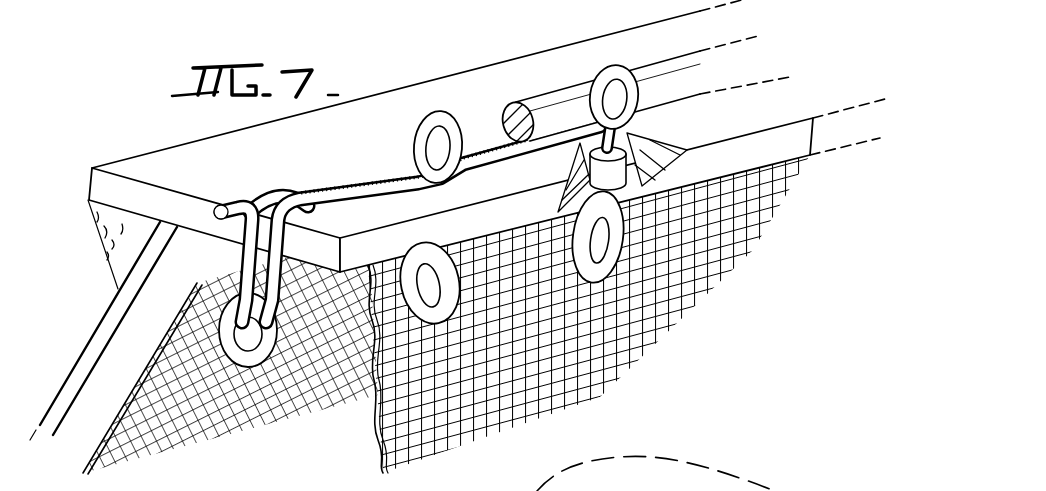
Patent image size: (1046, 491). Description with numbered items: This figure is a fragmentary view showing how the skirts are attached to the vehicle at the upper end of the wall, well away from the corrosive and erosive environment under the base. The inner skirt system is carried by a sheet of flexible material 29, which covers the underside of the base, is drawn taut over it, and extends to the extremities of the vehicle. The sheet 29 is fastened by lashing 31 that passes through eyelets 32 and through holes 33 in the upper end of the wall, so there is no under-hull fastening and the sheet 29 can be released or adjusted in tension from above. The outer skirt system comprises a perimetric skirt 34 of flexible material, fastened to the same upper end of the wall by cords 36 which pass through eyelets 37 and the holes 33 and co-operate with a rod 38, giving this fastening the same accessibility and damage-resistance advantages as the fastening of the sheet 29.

The sheet of flexible material 29 is at (187, 430).
The lashing 31 is at (358, 178).
The eyelets 32 is at (247, 352).
The holes 33 is at (272, 196).
The perimetric skirt 34 is at (623, 343).
The cords 36 is at (416, 122).
The eyelets 37 is at (420, 318).
The rod 38 is at (542, 110).